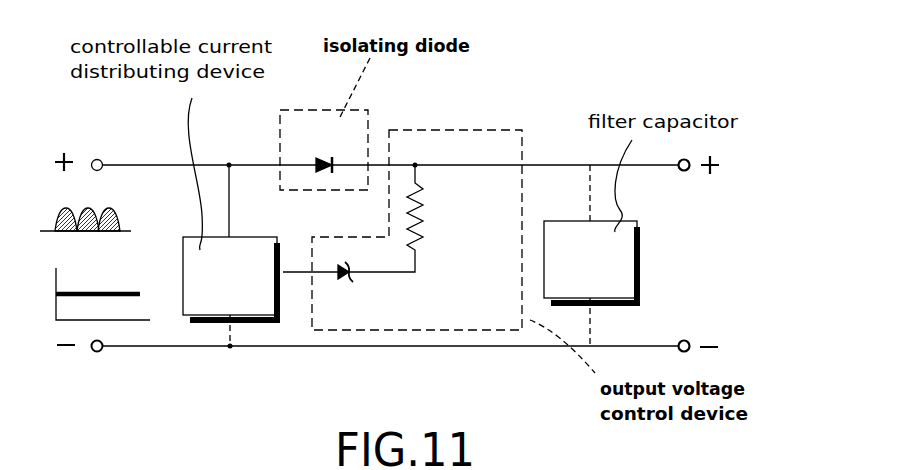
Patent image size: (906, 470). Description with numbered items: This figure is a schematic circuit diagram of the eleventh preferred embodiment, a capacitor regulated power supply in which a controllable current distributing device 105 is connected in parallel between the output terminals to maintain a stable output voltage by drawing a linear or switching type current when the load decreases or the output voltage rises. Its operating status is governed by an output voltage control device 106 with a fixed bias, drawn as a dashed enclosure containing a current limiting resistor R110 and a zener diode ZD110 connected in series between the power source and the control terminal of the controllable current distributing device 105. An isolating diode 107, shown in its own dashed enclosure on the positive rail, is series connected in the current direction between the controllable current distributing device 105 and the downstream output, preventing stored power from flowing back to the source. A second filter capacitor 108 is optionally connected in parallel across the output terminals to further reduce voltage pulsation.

The controllable current distributing device 105 is at (260, 278).
The output voltage control device 106 is at (452, 128).
The isolating diode 107 is at (324, 150).
The second filter capacitor 108 is at (590, 262).
The current limiting resistor R110 is at (429, 218).
The zener diode ZD110 is at (370, 290).